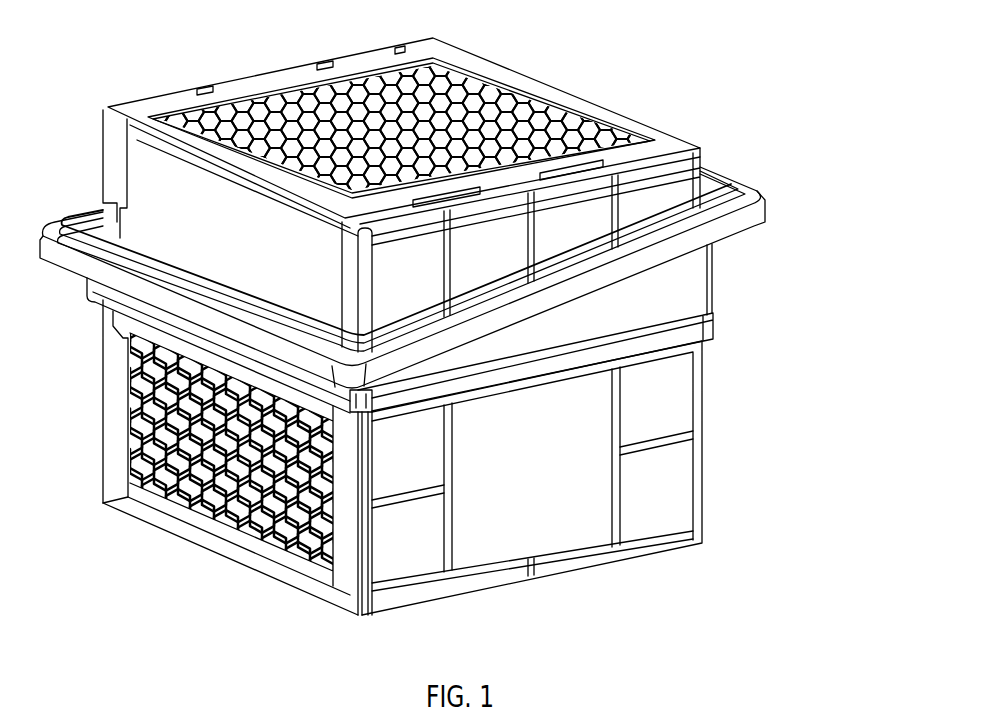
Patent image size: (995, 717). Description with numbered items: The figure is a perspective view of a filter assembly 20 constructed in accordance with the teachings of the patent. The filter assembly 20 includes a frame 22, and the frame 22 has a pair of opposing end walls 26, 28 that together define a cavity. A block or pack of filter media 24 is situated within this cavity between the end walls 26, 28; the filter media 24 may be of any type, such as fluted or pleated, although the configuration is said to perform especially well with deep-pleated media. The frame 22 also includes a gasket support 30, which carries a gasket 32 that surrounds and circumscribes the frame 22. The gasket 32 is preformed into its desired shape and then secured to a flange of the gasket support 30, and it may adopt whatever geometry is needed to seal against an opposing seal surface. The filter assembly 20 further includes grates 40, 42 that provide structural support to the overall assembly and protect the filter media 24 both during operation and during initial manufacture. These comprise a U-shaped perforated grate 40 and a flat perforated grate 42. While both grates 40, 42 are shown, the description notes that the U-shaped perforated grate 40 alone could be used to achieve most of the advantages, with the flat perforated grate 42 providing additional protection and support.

The filter assembly 20 is at (812, 136).
The frame 22 is at (404, 467).
The filter media 24 is at (313, 547).
The end wall 26 is at (663, 477).
The end wall 28 is at (113, 440).
The gasket support 30 is at (688, 292).
The gasket 32 is at (767, 211).
The U-shaped perforated grate 40 is at (167, 507).
The flat perforated grate 42 is at (593, 102).